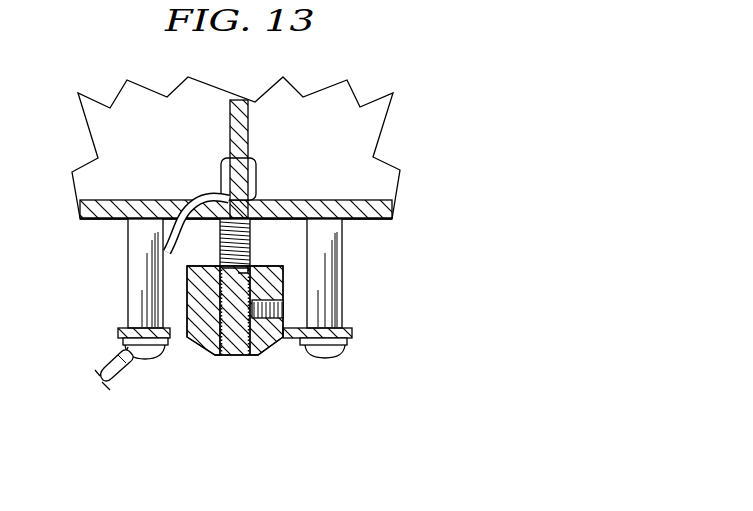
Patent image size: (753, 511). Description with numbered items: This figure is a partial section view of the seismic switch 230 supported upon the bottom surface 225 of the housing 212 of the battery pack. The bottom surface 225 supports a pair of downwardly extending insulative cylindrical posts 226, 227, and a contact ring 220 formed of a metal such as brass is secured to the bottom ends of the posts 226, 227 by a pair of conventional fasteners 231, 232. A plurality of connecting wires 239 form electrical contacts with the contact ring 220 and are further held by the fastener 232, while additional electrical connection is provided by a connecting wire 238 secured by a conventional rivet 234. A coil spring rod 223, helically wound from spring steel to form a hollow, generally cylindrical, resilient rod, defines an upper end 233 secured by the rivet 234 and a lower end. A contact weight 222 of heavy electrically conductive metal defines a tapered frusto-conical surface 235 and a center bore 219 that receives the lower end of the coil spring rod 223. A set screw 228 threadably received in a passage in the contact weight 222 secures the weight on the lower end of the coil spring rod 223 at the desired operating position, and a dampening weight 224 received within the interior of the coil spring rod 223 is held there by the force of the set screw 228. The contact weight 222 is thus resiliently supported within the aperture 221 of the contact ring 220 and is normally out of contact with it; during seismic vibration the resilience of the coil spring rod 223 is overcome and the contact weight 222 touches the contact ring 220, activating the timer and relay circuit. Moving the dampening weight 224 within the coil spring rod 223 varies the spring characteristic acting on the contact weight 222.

The housing 212 is at (342, 99).
The center bore 219 is at (229, 355).
The contact ring 220 is at (346, 326).
The aperture 221 is at (280, 340).
The contact weight 222 is at (212, 337).
The coil spring rod 223 is at (252, 250).
The dampening weight 224 is at (237, 352).
The bottom surface 225 is at (342, 206).
The insulative cylindrical post 226 is at (330, 250).
The insulative cylindrical post 227 is at (140, 245).
The set screw 228 is at (272, 345).
The seismic switch 230 is at (172, 318).
The fastener 231 is at (348, 353).
The fastener 232 is at (143, 360).
The upper end 233 is at (228, 158).
The rivet 234 is at (253, 163).
The tapered frusto-conical surface 235 is at (250, 347).
The connecting wire 238 is at (205, 193).
The connecting wires 239 is at (108, 370).